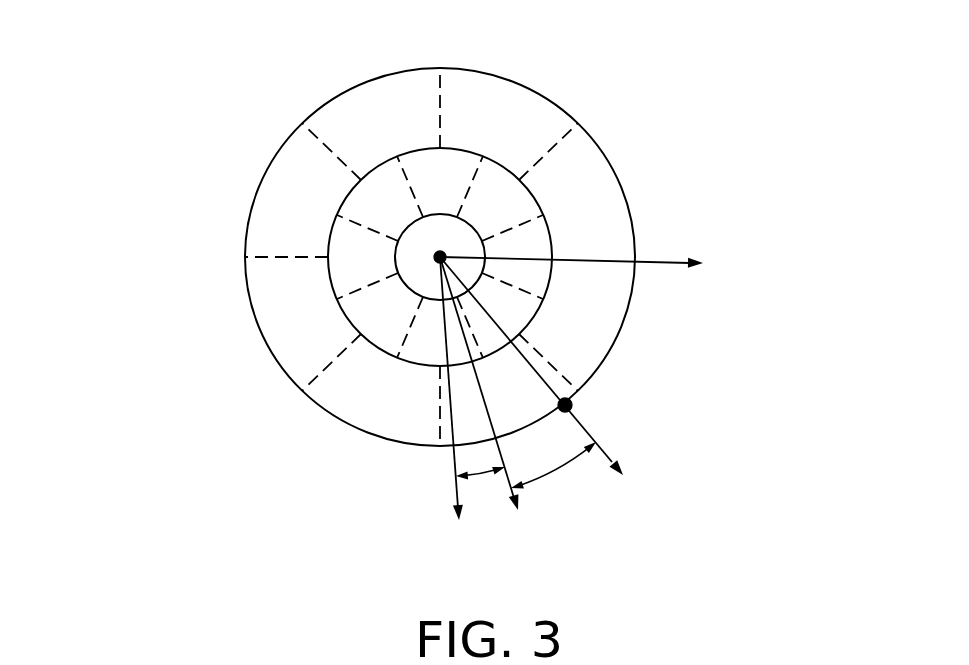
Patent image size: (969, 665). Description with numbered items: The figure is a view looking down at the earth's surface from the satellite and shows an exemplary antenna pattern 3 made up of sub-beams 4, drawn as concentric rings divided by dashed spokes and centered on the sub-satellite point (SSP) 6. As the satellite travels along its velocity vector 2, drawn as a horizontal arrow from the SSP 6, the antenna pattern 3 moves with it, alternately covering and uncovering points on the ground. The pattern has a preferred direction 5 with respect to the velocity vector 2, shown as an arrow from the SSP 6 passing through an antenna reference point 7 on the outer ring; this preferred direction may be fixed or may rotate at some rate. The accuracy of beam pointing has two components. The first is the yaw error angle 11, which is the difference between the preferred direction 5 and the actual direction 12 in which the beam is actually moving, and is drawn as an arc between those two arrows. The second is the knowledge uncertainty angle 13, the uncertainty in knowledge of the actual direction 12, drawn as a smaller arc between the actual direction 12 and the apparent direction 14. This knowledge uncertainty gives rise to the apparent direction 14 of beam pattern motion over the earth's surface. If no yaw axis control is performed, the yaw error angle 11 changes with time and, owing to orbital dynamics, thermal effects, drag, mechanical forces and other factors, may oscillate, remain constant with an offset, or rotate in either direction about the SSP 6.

The velocity vector 2 is at (641, 275).
The antenna pattern 3 is at (253, 182).
The sub-beams 4 is at (500, 72).
The preferred direction 5 is at (617, 374).
The sub-satellite point (SSP) 6 is at (440, 257).
The antenna reference point 7 is at (568, 403).
The yaw error angle 11 is at (560, 467).
The actual direction 12 is at (522, 425).
The knowledge uncertainty angle 13 is at (477, 470).
The apparent direction 14 is at (458, 514).